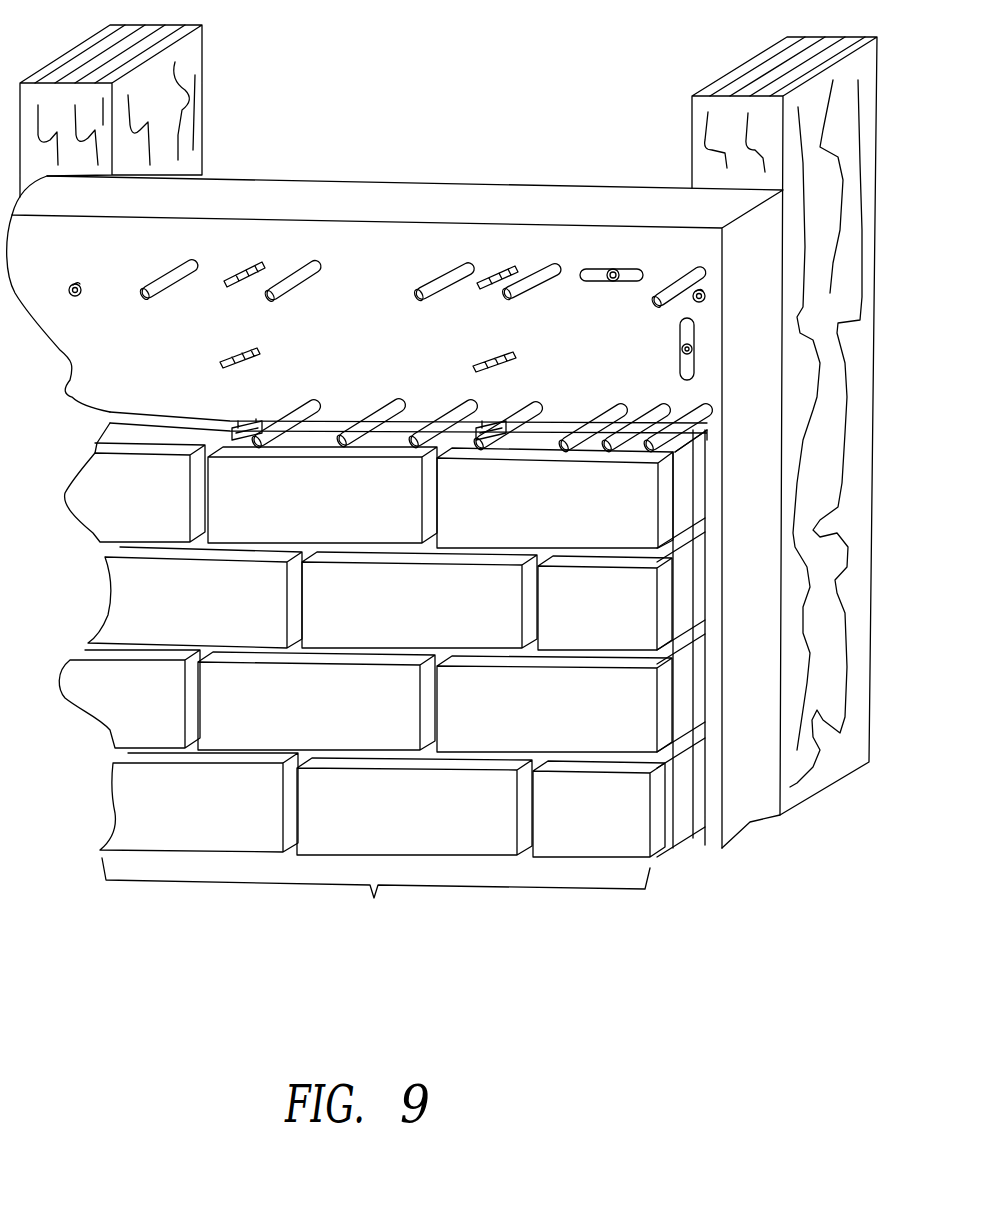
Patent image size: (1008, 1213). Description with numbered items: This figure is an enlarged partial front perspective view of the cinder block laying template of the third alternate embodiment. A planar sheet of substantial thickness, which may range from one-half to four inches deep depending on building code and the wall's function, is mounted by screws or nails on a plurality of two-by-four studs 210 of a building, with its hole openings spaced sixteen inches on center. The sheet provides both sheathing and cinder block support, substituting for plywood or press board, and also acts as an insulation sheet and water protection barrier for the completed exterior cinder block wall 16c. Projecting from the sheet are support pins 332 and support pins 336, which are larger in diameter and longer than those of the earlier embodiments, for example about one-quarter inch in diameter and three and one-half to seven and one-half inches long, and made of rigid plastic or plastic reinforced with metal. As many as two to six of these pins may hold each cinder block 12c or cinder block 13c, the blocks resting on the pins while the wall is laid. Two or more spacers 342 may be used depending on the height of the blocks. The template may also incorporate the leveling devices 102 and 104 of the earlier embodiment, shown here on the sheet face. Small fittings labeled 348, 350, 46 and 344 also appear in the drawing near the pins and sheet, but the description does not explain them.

The 2×4 stud 210 is at (191, 82).
The cinder block wall 16c is at (401, 673).
The cinder block 12c is at (437, 847).
The cinder block 13c is at (632, 604).
The support pin 332 is at (165, 285).
The spacer 342 is at (249, 265).
The clip 348 is at (240, 425).
The fastener 350 is at (238, 425).
The ring 46 is at (68, 292).
The loop 344 is at (80, 283).
The leveling device 102 is at (626, 268).
The leveling device 104 is at (694, 363).
The support pin 336 is at (660, 413).